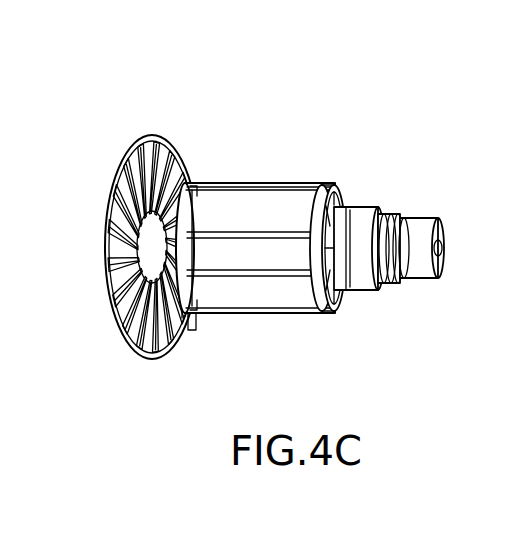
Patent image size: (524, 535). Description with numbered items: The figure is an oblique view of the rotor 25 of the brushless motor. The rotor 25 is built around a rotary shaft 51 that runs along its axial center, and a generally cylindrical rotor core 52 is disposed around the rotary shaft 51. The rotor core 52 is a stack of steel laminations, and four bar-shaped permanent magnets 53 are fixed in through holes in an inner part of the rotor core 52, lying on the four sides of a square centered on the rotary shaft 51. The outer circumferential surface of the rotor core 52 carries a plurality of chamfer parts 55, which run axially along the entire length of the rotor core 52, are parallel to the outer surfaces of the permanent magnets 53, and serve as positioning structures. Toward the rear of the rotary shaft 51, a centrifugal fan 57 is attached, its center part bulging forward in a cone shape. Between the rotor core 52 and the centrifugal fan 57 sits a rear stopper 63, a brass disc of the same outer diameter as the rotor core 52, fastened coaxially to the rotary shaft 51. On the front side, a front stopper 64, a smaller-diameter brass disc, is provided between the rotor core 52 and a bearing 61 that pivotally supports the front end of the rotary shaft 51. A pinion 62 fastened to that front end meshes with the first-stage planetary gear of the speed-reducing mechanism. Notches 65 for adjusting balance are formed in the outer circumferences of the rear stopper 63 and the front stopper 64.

The rotor 25 is at (323, 118).
The rotary shaft 51 is at (443, 247).
The rotor core 52 is at (253, 205).
The permanent magnets 53 is at (340, 198).
The chamfer parts 55 is at (290, 188).
The centrifugal fan 57 is at (159, 137).
The bearing 61 is at (383, 215).
The pinion 62 is at (422, 220).
The rear stopper 63 is at (192, 322).
The front stopper 64 is at (348, 275).
The notches 65 is at (195, 178).